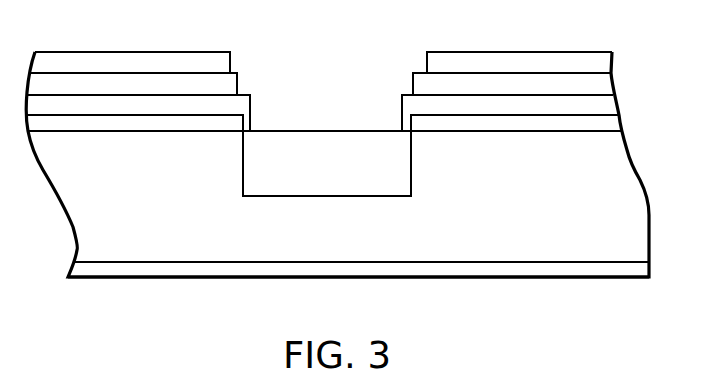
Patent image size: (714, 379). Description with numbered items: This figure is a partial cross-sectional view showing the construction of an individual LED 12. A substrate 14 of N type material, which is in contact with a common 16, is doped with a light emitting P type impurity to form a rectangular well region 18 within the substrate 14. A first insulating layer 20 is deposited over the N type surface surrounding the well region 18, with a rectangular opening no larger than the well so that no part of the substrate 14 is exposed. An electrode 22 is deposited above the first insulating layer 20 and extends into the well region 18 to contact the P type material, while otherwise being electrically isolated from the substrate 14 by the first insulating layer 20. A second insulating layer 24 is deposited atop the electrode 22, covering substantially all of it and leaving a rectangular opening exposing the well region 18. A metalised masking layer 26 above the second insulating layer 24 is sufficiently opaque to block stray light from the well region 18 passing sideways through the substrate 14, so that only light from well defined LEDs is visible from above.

The LED 12 is at (374, 32).
The substrate 14 is at (287, 250).
The common 16 is at (397, 272).
The well region 18 is at (411, 183).
The first insulating layer 20 is at (228, 123).
The electrode 22 is at (250, 112).
The second insulating layer 24 is at (237, 85).
The masking layer 26 is at (232, 63).